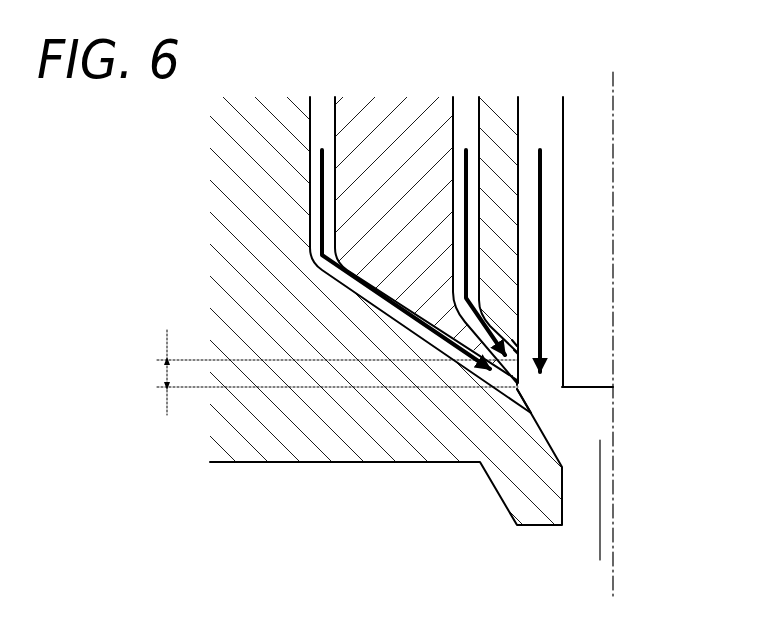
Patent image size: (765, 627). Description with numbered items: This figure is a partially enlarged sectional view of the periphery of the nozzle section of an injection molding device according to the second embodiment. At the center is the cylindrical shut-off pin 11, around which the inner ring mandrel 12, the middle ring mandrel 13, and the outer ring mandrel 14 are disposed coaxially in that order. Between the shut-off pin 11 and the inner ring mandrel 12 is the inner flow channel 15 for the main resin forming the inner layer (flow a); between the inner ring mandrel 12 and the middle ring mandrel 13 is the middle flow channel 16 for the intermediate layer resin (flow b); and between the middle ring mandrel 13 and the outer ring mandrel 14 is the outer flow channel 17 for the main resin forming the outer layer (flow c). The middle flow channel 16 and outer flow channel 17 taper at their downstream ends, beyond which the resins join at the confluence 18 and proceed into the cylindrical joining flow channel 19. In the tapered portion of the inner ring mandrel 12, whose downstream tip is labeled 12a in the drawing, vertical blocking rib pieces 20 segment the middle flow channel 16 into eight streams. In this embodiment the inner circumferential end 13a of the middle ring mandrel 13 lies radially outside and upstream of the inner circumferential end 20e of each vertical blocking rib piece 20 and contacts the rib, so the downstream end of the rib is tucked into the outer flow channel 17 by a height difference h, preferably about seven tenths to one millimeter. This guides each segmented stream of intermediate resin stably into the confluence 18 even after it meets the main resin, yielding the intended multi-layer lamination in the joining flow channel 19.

The shut-off pin 11 is at (587, 113).
The inner ring mandrel 12 is at (495, 113).
The tip of partition wall 12a is at (518, 353).
The middle ring mandrel 13 is at (389, 116).
The inner circumferential end of the middle ring mandrel 13a is at (514, 336).
The outer ring mandrel 14 is at (251, 113).
The inner flow channel 15 is at (540, 108).
The middle flow channel 16 is at (463, 108).
The outer flow channel 17 is at (321, 108).
The confluence 18 is at (538, 401).
The joining flow channel 19 is at (589, 502).
The vertical blocking rib piece 20 is at (493, 322).
The inner circumferential end of the vertical blocking rib piece 20e is at (518, 386).